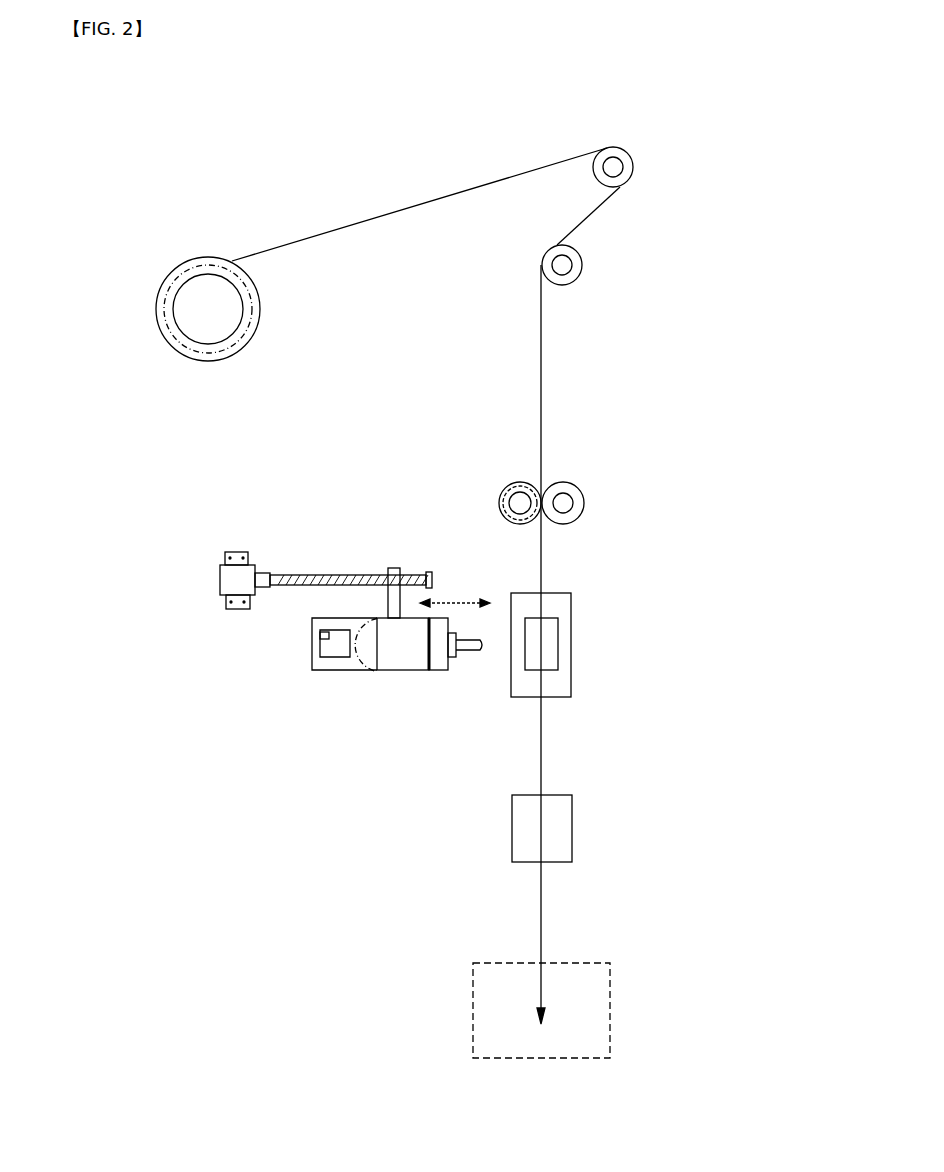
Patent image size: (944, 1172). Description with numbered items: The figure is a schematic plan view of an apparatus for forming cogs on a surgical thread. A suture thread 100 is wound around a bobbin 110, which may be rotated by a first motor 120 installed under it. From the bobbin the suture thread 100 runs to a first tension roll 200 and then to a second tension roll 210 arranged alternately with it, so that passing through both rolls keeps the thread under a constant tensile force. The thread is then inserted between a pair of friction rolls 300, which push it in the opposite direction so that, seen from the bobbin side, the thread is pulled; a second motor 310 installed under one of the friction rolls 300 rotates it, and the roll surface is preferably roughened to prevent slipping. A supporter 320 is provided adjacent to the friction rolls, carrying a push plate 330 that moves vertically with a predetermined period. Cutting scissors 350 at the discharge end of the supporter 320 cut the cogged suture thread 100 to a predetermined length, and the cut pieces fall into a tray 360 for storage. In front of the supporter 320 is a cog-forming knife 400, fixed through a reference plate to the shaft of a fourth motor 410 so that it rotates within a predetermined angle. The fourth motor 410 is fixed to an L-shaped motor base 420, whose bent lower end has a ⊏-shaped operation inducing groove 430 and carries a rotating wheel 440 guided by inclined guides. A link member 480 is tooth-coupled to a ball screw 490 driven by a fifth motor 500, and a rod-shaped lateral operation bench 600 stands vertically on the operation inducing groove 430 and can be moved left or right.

The suture thread 100 is at (400, 210).
The bobbin 110 is at (196, 258).
The first motor 120 is at (165, 332).
The first tension roll 200 is at (632, 147).
The second tension roll 210 is at (582, 265).
The friction rolls 300 is at (535, 483).
The second motor 310 is at (508, 487).
The supporter 320 is at (571, 612).
The push plate 330 is at (548, 660).
The cutting scissors 350 is at (572, 830).
The tray 360 is at (610, 1010).
The cog-forming knife 400 is at (472, 652).
The fourth motor 410 is at (407, 658).
The motor base 420 is at (438, 667).
The operation inducing groove 430 is at (325, 650).
The rotating wheel 440 is at (366, 672).
The link member 480 is at (395, 568).
The ball screw 490 is at (317, 575).
The fifth motor 500 is at (222, 566).
The lateral operation bench 600 is at (320, 636).